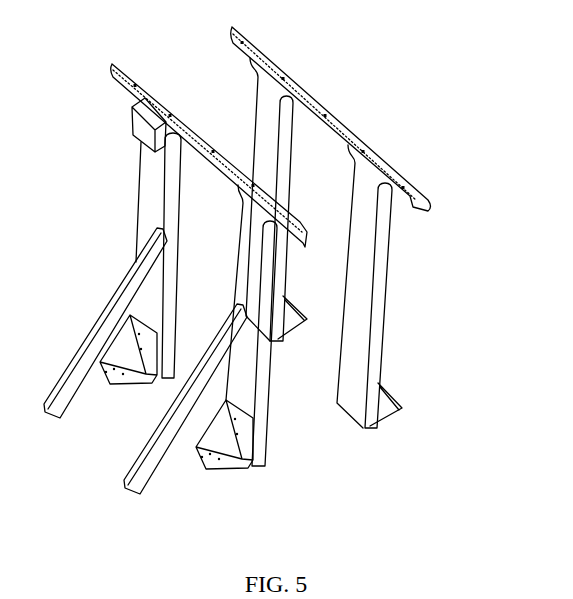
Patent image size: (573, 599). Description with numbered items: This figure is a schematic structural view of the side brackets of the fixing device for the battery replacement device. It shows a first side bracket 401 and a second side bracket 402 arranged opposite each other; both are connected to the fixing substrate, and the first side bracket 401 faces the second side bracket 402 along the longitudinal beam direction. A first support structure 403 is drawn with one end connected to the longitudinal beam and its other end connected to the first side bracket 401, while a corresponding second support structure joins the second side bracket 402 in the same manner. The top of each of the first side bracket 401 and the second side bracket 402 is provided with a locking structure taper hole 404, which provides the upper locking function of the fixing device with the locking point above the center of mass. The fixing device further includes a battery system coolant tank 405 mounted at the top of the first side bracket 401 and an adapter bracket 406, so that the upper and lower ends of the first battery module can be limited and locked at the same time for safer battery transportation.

The first side bracket 401 is at (263, 347).
The second side bracket 402 is at (380, 297).
The first support structure 403 is at (103, 310).
The locking structure taper hole 404 is at (327, 110).
The battery system coolant tank 405 is at (131, 128).
The adapter bracket 406 is at (118, 396).